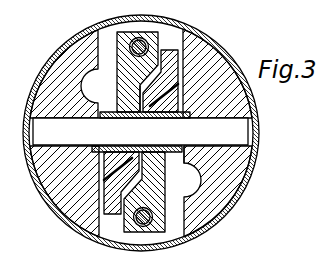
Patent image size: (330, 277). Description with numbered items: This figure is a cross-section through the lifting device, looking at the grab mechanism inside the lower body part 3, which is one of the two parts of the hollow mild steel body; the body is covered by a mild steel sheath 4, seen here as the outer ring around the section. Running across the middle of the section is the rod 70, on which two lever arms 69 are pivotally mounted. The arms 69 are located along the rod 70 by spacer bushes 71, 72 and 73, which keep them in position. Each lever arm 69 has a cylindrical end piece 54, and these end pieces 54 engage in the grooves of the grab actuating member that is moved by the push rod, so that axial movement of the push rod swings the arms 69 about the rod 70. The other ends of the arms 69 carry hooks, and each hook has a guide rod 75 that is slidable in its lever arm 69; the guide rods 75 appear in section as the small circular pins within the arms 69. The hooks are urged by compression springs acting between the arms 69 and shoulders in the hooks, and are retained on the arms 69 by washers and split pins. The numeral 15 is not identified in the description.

The lower body part 3 is at (47, 89).
The mild steel sheath 4 is at (58, 51).
The pivot pin 15 is at (140, 39).
The cylindrical end piece 54 is at (168, 48).
The lever arm 69 is at (118, 32).
The rod 70 is at (179, 137).
The spacer bush 71 is at (117, 113).
The spacer bush 72 is at (140, 111).
The spacer bush 73 is at (170, 153).
The guide rod 75 is at (151, 215).